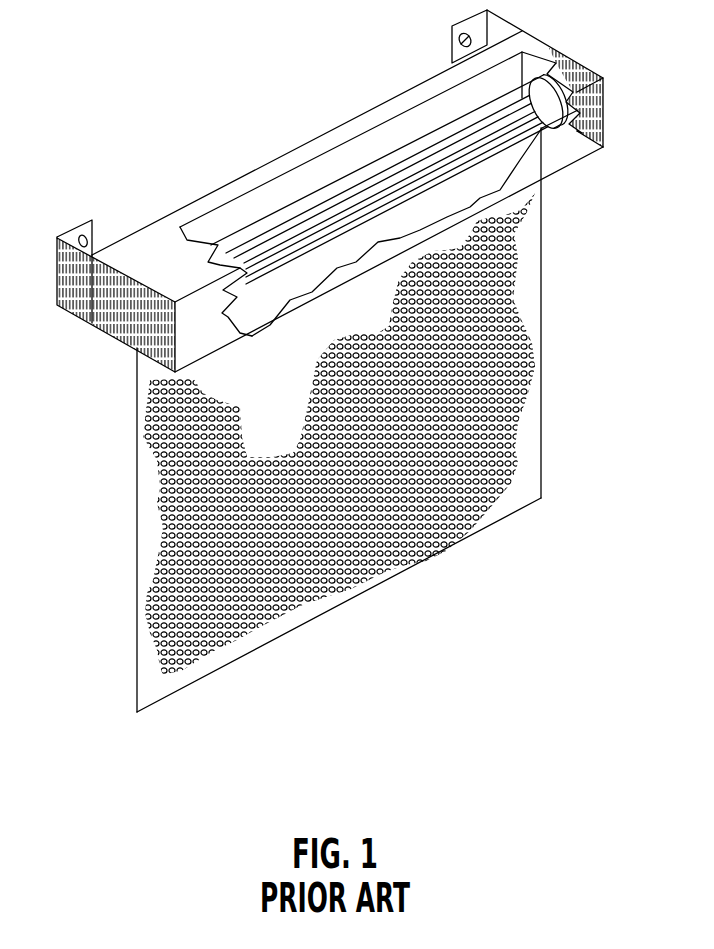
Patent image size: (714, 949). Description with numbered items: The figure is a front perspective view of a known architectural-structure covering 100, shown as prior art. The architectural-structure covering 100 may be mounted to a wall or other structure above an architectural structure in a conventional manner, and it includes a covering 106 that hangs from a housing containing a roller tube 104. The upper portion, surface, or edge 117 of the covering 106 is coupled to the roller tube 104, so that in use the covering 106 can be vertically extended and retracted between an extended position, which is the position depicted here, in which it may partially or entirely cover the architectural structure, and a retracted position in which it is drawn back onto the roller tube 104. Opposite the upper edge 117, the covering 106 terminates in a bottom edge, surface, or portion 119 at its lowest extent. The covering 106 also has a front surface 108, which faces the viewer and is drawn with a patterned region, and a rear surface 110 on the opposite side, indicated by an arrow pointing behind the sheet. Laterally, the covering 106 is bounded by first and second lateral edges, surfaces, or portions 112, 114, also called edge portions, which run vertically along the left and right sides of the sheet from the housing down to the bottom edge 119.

The architectural-structure covering 100 is at (310, 114).
The roller tube 104 is at (548, 95).
The covering 106 is at (337, 440).
The front surface 108 is at (395, 493).
The rear surface 110 is at (337, 440).
The first lateral edge 112 is at (137, 413).
The second lateral edge 114 is at (542, 327).
The upper edge 117 is at (417, 183).
The bottom edge 119 is at (137, 712).